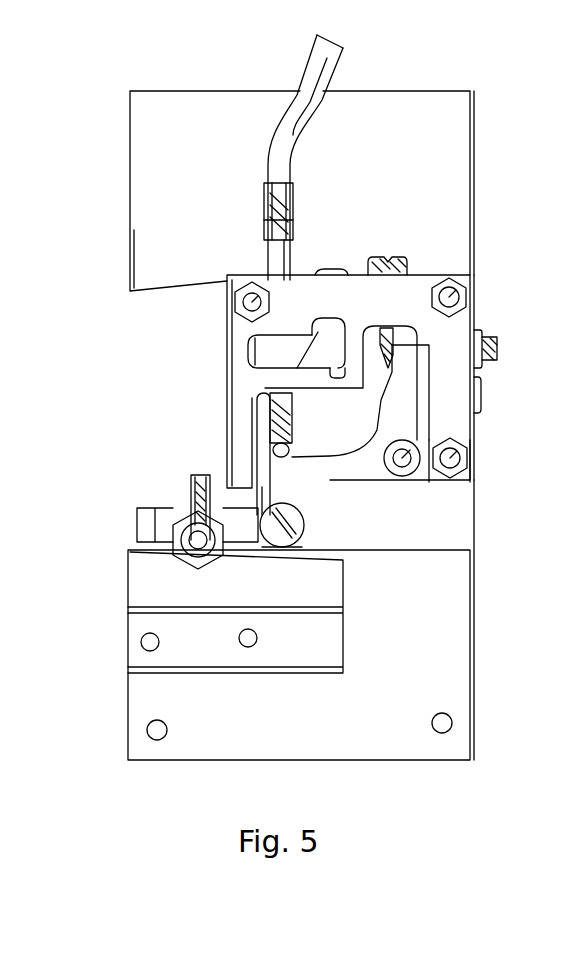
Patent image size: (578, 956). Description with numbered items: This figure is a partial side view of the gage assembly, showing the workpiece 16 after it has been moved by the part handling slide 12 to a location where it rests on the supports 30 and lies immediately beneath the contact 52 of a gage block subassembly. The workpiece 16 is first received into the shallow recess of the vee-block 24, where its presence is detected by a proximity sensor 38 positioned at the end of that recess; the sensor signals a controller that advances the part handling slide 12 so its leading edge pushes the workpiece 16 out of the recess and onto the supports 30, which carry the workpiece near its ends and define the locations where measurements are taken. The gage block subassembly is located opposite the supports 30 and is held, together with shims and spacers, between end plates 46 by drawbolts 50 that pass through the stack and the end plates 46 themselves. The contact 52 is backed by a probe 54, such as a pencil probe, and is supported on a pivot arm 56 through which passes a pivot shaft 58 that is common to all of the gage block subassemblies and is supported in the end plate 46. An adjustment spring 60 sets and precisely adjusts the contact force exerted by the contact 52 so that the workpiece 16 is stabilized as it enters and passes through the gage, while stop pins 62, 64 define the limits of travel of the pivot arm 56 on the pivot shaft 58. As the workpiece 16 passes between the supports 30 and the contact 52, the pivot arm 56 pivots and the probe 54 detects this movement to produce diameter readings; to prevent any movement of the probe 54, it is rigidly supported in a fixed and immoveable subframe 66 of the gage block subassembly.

The part handling slide 12 is at (194, 507).
The workpiece 16 is at (303, 514).
The vee-block 24 is at (182, 588).
The supports 30 is at (325, 532).
The proximity sensor 38 is at (197, 554).
The end plates 46 is at (158, 140).
The drawbolts 50 is at (240, 298).
The contact 52 is at (292, 487).
The probe 54 is at (270, 216).
The pivot arm 56 is at (257, 468).
The pivot shaft 58 is at (412, 451).
The adjustment spring 60 is at (481, 390).
The stop pin 62 is at (496, 337).
The stop pin 64 is at (392, 258).
The subframe 66 is at (229, 365).